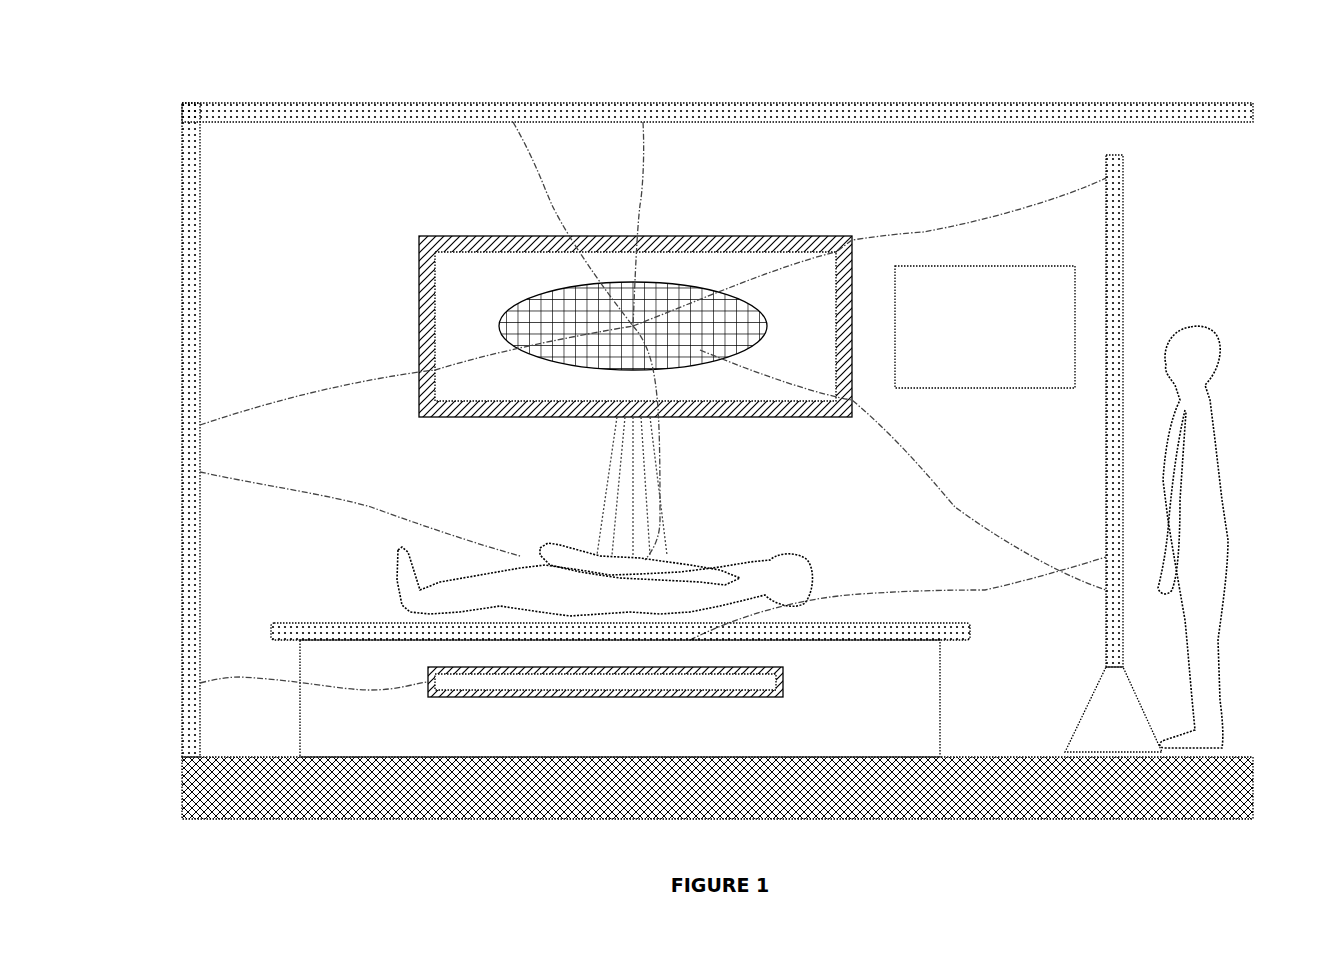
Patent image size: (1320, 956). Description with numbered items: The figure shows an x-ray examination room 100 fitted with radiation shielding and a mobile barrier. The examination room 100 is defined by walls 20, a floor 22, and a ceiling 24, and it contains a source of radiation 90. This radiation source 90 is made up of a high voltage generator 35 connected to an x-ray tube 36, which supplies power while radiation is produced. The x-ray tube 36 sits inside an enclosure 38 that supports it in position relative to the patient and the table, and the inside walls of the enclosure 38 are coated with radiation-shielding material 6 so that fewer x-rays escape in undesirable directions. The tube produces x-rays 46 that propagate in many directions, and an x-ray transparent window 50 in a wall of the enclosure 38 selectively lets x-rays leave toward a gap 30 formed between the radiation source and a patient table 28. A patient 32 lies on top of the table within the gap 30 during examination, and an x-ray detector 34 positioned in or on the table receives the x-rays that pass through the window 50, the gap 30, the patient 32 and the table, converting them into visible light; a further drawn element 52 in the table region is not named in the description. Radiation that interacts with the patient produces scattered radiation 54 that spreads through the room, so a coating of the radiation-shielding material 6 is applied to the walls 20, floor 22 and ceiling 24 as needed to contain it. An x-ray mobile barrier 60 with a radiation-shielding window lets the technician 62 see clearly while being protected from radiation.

The x-ray examination room 100 is at (1105, 68).
The source of radiation 90 is at (343, 258).
The radiation-shielding material 6 is at (390, 110).
The walls 20 is at (293, 163).
The floor 22 is at (205, 795).
The ceiling 24 is at (795, 110).
The patient table 28 is at (955, 632).
The gap 30 is at (620, 520).
The patient 32 is at (695, 570).
The x-ray detector 34 is at (783, 697).
The high voltage generator 35 is at (972, 372).
The x-ray tube 36 is at (718, 322).
The enclosure 38 is at (810, 372).
The x-rays 46 is at (552, 205).
The x-ray transparent window 50 is at (658, 408).
The detector plate 52 is at (528, 693).
The scattered radiation 54 is at (371, 507).
The x-ray mobile barrier 60 is at (1113, 222).
The technician 62 is at (1205, 430).